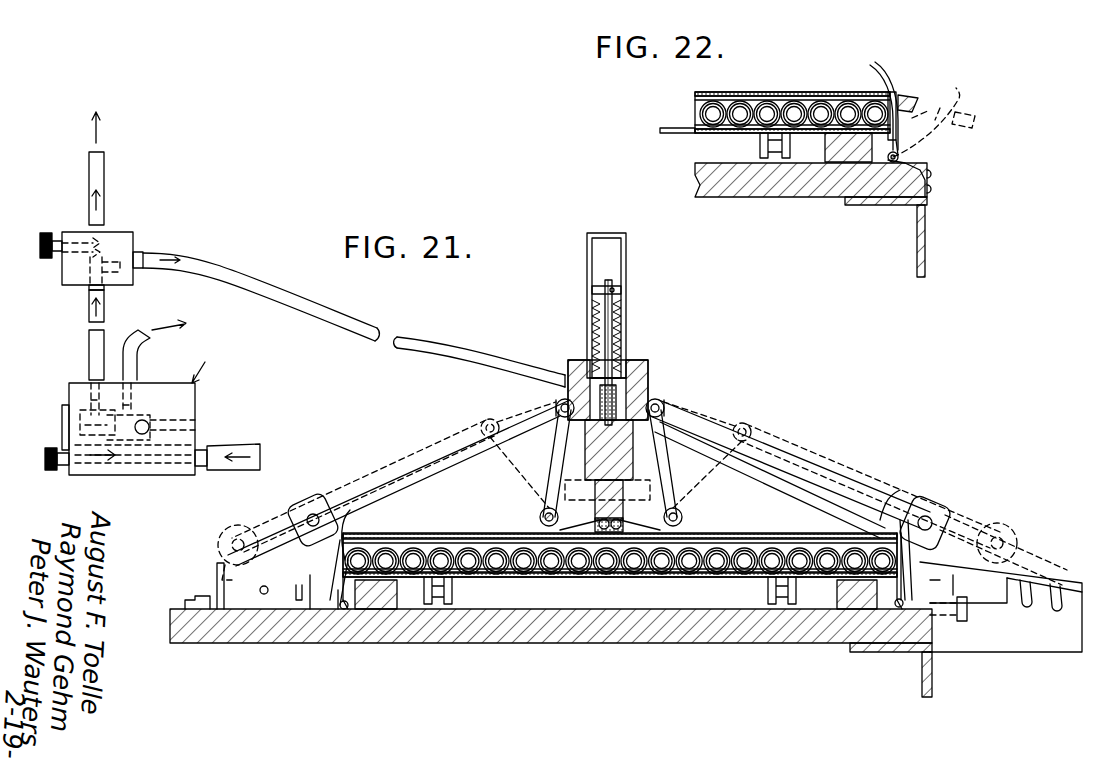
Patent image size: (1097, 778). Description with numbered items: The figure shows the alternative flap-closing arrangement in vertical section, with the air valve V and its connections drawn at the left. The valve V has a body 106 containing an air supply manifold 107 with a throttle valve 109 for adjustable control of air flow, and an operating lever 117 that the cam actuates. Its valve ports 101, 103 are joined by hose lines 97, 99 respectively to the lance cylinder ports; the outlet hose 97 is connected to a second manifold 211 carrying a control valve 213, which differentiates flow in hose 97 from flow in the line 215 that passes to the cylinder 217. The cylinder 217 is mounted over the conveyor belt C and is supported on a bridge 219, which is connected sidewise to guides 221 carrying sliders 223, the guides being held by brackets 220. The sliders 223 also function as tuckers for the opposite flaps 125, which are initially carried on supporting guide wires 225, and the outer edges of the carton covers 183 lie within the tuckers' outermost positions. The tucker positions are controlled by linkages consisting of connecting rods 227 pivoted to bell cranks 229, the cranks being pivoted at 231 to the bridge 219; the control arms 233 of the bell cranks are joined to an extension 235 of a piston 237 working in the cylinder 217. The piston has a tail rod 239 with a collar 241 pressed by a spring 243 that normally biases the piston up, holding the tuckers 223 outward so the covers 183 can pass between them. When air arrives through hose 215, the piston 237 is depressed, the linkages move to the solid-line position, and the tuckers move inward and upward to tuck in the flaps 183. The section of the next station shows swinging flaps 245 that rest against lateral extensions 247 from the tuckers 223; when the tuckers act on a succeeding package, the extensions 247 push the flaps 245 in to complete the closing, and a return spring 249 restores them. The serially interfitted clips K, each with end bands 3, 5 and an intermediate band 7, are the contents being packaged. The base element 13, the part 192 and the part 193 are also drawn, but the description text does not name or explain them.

In FIG. 21, the end band 3 is at (692, 572).
In FIG. 22, the end band 3 is at (745, 112).
In FIG. 21, the end band 5 is at (390, 556).
In FIG. 22, the end band 5 is at (740, 125).
In FIG. 21, the intermediate band 7 is at (830, 538).
In FIG. 22, the intermediate band 7 is at (767, 112).
In FIG. 21, the base plate 13 is at (790, 638).
In FIG. 22, the base plate 13 is at (813, 220).
In FIG. 21, the hose line 97 is at (89, 162).
In FIG. 21, the hose line 99 is at (140, 345).
In FIG. 21, the valve port 101 is at (88, 410).
In FIG. 21, the valve port 103 is at (140, 400).
In FIG. 21, the body 106 is at (195, 403).
In FIG. 21, the air supply manifold 107 is at (201, 468).
In FIG. 21, the throttle valve 109 is at (100, 465).
In FIG. 21, the operating lever 117 is at (145, 440).
In FIG. 21, the flap 125 is at (320, 492).
In FIG. 21, the carton cover 183 is at (905, 520).
In FIG. 22, the carton cover 183 is at (860, 100).
In FIG. 21, the stop 192 is at (338, 605).
In FIG. 22, the stop 192 is at (930, 115).
In FIG. 21, the bracket 193 is at (345, 605).
In FIG. 22, the bracket 193 is at (905, 135).
In FIG. 21, the second manifold 211 is at (74, 278).
In FIG. 21, the control valve 213 is at (58, 258).
In FIG. 21, the line 215 is at (205, 258).
In FIG. 21, the cylinder 217 is at (650, 368).
In FIG. 21, the bridge 219 is at (735, 505).
In FIG. 21, the bracket 220 is at (1043, 640).
In FIG. 21, the guide 221 is at (218, 548).
In FIG. 21, the slider 223 is at (300, 535).
In FIG. 21, the supporting guide wire 225 is at (296, 600).
In FIG. 21, the connecting rod 227 is at (355, 485).
In FIG. 21, the bell crank 229 is at (665, 462).
In FIG. 21, the pivot 231 is at (540, 514).
In FIG. 21, the control arm 233 is at (610, 520).
In FIG. 21, the extension 235 is at (600, 528).
In FIG. 21, the piston 237 is at (655, 420).
In FIG. 21, the tail rod 239 is at (613, 322).
In FIG. 21, the collar 241 is at (622, 290).
In FIG. 21, the spring 243 is at (592, 312).
In FIG. 21, the swinging flap 245 is at (350, 510).
In FIG. 22, the swinging flap 245 is at (880, 78).
In FIG. 22, the lateral extension 247 is at (912, 95).
In FIG. 21, the return spring 249 is at (350, 608).
In FIG. 22, the return spring 249 is at (892, 162).
In FIG. 21, the conveyor belt C is at (740, 577).
In FIG. 22, the conveyor belt C is at (690, 135).
In FIG. 21, the clip K is at (500, 577).
In FIG. 22, the clip K is at (816, 147).
In FIG. 21, the air valve V is at (203, 365).